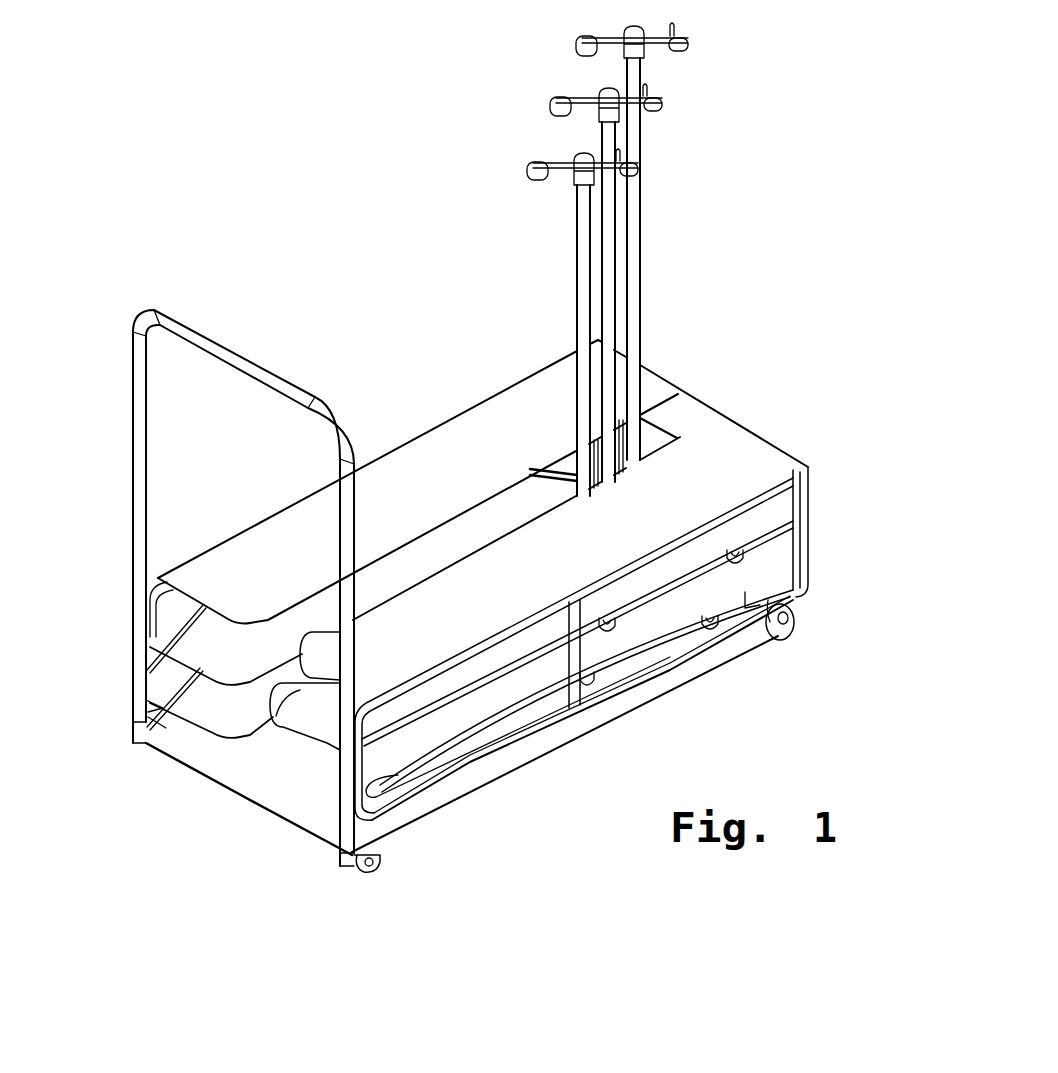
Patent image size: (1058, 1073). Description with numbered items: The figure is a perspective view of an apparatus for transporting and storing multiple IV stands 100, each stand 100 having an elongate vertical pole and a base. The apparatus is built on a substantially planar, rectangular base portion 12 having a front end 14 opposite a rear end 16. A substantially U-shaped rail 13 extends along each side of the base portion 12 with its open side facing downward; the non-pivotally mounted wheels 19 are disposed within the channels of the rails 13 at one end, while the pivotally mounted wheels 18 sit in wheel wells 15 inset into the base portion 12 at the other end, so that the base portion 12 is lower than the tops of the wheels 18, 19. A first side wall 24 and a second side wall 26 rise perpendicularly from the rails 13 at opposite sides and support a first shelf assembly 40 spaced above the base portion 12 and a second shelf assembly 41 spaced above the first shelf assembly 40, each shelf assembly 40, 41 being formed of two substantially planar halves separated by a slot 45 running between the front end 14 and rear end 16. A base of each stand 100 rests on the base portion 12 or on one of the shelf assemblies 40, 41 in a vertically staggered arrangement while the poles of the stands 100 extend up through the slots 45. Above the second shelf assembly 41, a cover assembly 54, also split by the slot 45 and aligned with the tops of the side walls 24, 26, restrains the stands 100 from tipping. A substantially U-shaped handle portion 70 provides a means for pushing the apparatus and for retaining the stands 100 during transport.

The IV stand 100 is at (642, 73).
The handle portion 70 is at (247, 347).
The second side wall 26 is at (467, 407).
The cover assembly 54 is at (424, 517).
The first side wall 24 is at (808, 497).
The front end 14 is at (810, 538).
The wheel well 15 is at (771, 587).
The pivotally mounted wheel 18 is at (782, 641).
The U-shaped rail 13 is at (655, 690).
The second shelf assembly 41 is at (205, 643).
The first shelf assembly 40 is at (205, 698).
The rear end 16 is at (190, 773).
The slot 45 is at (267, 740).
The base portion 12 is at (315, 823).
The non-pivotally mounted wheel 19 is at (368, 872).